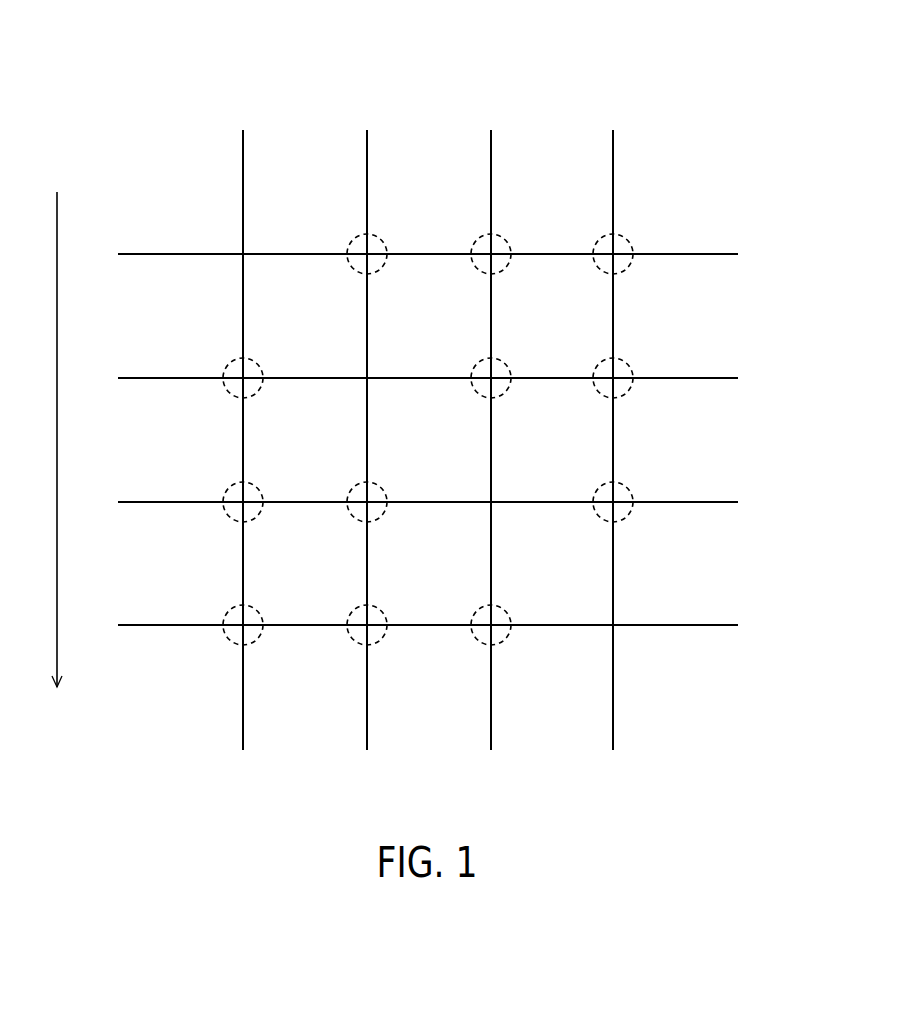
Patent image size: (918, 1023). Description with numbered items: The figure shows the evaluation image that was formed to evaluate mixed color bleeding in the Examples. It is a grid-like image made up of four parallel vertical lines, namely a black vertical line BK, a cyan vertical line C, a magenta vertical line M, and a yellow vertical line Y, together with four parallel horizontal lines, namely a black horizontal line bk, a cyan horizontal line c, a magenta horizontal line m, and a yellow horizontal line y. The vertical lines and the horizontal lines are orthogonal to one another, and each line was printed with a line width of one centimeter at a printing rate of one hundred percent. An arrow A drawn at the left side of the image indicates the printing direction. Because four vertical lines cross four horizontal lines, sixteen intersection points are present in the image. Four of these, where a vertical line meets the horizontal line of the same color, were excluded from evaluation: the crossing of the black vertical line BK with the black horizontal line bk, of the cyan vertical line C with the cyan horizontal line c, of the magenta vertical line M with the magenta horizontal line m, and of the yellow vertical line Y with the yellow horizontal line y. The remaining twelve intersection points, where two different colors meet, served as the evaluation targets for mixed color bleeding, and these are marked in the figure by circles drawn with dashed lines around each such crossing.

The black vertical line BK is at (243, 113).
The cyan vertical line C is at (367, 113).
The magenta vertical line M is at (491, 113).
The yellow vertical line Y is at (613, 113).
The black horizontal line bk is at (755, 254).
The cyan horizontal line c is at (755, 378).
The magenta horizontal line m is at (755, 502).
The yellow horizontal line y is at (755, 625).
The arrow indicating printing direction A is at (57, 421).